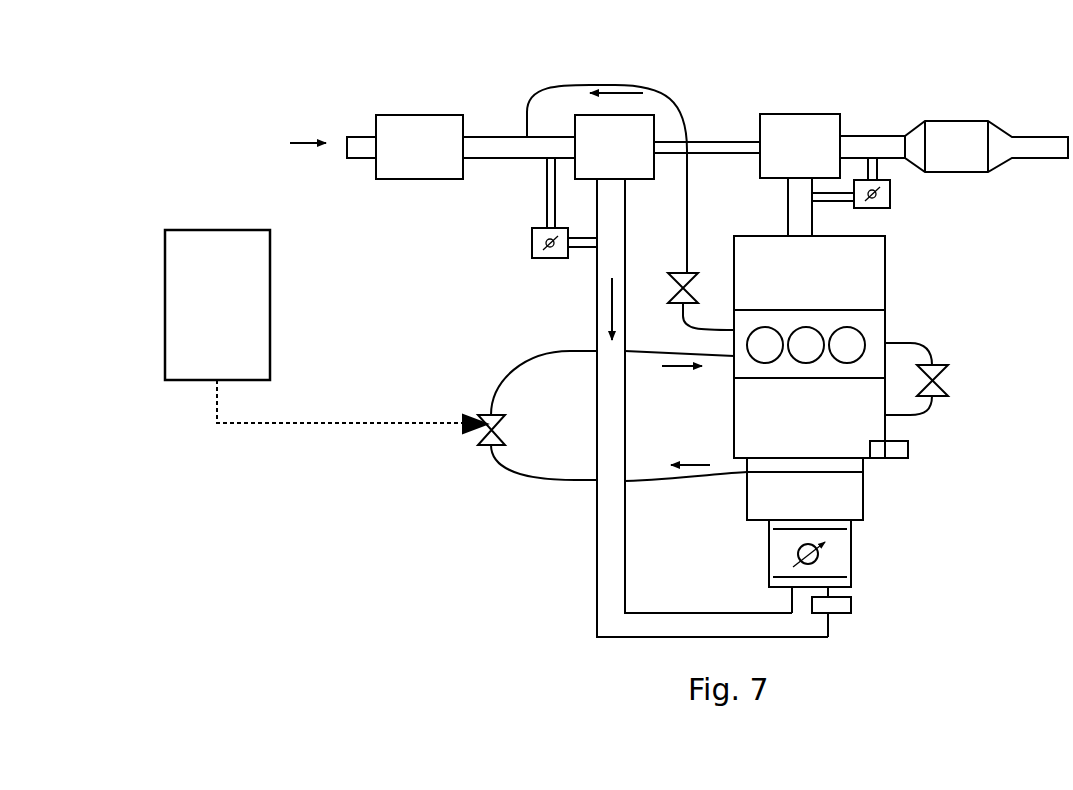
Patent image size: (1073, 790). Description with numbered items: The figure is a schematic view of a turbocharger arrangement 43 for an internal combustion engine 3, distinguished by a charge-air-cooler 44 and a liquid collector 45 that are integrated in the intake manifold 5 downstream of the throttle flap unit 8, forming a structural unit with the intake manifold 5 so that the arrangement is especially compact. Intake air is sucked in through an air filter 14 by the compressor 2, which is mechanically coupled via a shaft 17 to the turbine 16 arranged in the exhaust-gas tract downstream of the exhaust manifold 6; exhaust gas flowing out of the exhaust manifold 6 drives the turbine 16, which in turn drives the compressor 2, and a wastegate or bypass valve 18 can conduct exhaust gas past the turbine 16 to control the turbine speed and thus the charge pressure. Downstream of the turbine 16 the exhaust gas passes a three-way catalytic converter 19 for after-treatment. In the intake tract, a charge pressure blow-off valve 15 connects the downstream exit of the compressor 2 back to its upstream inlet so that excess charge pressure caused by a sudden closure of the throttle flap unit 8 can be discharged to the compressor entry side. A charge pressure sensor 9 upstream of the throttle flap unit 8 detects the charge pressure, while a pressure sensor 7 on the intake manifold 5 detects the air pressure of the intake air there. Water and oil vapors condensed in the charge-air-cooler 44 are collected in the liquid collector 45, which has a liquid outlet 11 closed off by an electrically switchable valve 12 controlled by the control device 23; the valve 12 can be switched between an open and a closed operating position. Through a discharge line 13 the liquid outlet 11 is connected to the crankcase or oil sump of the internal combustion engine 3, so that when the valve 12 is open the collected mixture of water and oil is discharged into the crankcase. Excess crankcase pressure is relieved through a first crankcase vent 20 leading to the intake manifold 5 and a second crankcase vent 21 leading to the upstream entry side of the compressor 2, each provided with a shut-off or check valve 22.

The compressor 2 is at (638, 172).
The internal combustion engine 3 is at (822, 347).
The intake manifold 5 is at (743, 413).
The exhaust manifold 6 is at (880, 243).
The pressure sensor 7 is at (908, 447).
The throttle flap unit 8 is at (851, 553).
The charge pressure sensor 9 is at (851, 605).
The liquid outlet 11 is at (738, 480).
The electrically switchable valve 12 is at (475, 437).
The discharge line 13 is at (503, 467).
The air filter 14 is at (420, 167).
The charge pressure blow-off valve 15 is at (530, 247).
The turbine 16 is at (800, 110).
The shaft 17 is at (710, 138).
The wastegate or bypass valve 18 is at (895, 193).
The three-way catalytic converter 19 is at (957, 127).
The first crankcase vent 20 is at (933, 402).
The second crankcase vent 21 is at (648, 85).
The shut-off or check valve 22 is at (688, 270).
The control device 23 is at (223, 230).
The turbocharger arrangement 43 is at (415, 299).
The charge-air-cooler 44 is at (863, 502).
The liquid collector 45 is at (863, 465).